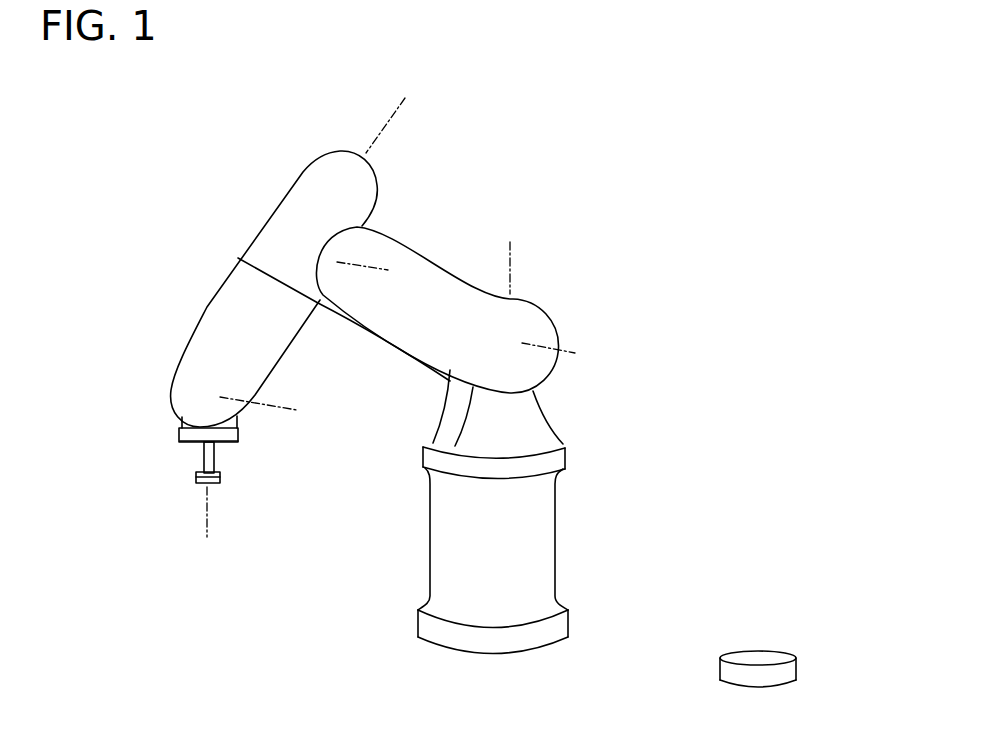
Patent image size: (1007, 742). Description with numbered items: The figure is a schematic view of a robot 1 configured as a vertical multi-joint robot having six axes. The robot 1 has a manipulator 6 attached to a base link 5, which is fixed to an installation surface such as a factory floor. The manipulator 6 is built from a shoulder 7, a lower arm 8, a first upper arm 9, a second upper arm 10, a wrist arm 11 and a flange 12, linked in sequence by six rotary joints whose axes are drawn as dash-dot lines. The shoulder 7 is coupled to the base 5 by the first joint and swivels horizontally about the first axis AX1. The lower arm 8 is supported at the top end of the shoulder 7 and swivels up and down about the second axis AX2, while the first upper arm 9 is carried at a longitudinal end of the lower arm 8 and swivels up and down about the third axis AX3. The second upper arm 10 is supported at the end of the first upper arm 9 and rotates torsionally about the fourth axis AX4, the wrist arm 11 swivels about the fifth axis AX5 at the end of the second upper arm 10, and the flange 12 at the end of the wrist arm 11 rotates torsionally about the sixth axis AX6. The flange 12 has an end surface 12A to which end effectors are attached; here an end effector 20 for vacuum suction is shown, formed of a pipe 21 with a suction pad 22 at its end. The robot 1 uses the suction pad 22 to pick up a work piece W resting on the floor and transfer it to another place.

The robot 1 is at (718, 170).
The base link 5 is at (545, 560).
The manipulator 6 is at (475, 217).
The shoulder 7 is at (527, 430).
The lower arm 8 is at (403, 252).
The first upper arm 9 is at (297, 190).
The second upper arm 10 is at (213, 330).
The wrist arm 11 is at (180, 425).
The flange 12 is at (190, 440).
The end surface 12A is at (222, 446).
The end effector 20 is at (148, 480).
The pipe 21 is at (207, 455).
The suction pad 22 is at (207, 487).
The first axis AX1 is at (518, 256).
The second axis AX2 is at (571, 357).
The third axis AX3 is at (384, 277).
The fourth axis AX4 is at (403, 113).
The fifth axis AX5 is at (281, 411).
The sixth axis AX6 is at (208, 527).
The work piece W is at (745, 657).